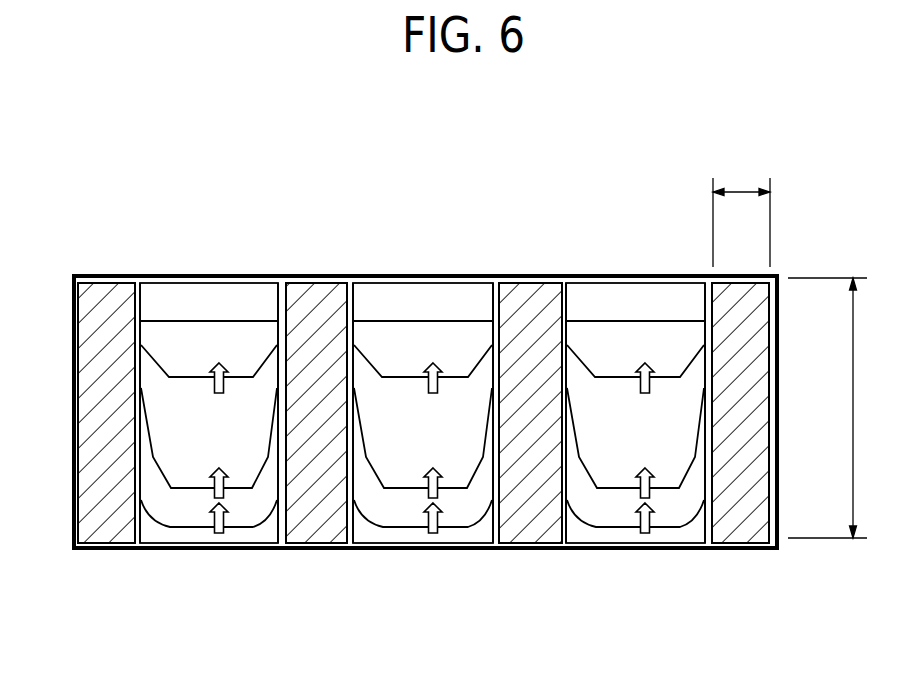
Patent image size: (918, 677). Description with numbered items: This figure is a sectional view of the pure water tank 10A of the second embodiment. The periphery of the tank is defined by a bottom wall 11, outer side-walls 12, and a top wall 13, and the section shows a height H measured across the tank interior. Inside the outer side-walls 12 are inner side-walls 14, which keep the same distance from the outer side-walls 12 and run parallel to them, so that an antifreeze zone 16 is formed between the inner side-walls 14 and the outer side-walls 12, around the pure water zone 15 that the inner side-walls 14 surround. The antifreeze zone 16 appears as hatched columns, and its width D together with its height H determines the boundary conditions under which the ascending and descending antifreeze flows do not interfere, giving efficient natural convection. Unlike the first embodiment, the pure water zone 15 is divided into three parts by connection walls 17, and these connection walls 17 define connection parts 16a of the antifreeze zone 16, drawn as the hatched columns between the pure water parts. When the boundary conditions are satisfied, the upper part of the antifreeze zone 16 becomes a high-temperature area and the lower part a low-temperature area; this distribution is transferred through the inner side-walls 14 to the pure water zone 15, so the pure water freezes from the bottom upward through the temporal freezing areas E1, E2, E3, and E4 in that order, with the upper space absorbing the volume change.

The pure water tank 10A is at (112, 237).
The bottom wall 11 is at (413, 544).
The outer side-walls 12 is at (73, 478).
The top wall 13 is at (453, 277).
The inner side-walls 14 is at (158, 278).
The pure water zone 15 is at (203, 300).
The antifreeze zone 16 is at (100, 413).
The connection parts 16a is at (315, 508).
The connection walls 17 is at (277, 293).
The temporal freezing area E1 is at (480, 532).
The temporal freezing area E2 is at (422, 512).
The temporal freezing area E3 is at (422, 443).
The temporal freezing area E4 is at (422, 363).
The width of the antifreeze zone D is at (741, 211).
The height of the antifreeze zone H is at (835, 408).